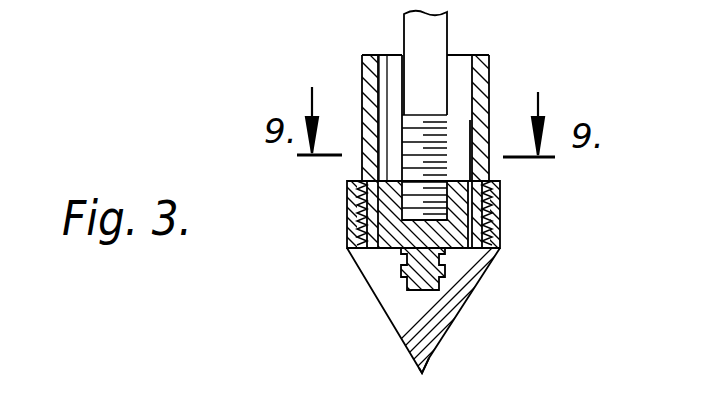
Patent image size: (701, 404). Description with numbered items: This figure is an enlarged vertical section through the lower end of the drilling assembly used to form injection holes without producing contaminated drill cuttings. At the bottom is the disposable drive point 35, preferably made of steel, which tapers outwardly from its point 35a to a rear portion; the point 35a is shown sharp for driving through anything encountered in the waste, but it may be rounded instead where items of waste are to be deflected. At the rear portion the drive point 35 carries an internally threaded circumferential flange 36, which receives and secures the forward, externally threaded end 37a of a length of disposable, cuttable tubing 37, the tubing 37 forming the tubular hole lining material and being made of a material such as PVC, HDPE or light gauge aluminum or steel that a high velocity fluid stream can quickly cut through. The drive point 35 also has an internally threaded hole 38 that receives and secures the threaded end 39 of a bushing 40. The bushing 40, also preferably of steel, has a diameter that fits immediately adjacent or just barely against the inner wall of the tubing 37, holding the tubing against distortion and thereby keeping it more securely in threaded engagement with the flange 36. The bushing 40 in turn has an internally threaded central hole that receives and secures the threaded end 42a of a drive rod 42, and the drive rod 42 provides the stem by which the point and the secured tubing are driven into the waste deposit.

The drive point 35 is at (427, 335).
The point 35a is at (422, 373).
The internally threaded circumferential flange 36 is at (500, 197).
The cuttable tubing 37 is at (488, 78).
The externally threaded end 37a is at (481, 219).
The internally threaded hole 38 is at (440, 278).
The threaded end 39 is at (402, 270).
The bushing 40 is at (388, 212).
The drive rod 42 is at (440, 30).
The threaded end 42a is at (418, 128).